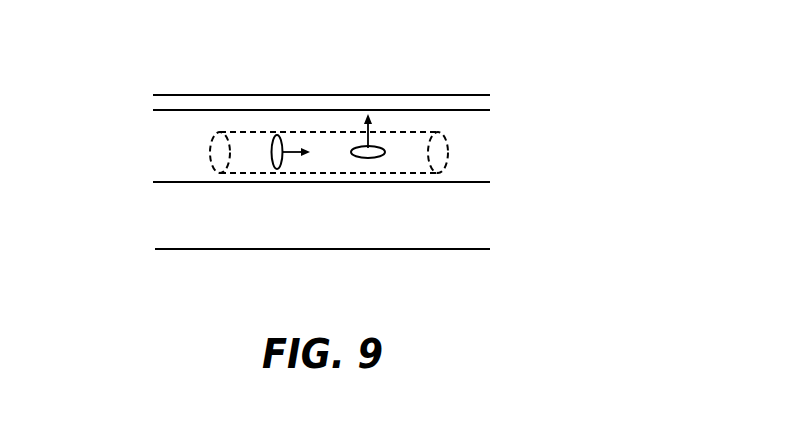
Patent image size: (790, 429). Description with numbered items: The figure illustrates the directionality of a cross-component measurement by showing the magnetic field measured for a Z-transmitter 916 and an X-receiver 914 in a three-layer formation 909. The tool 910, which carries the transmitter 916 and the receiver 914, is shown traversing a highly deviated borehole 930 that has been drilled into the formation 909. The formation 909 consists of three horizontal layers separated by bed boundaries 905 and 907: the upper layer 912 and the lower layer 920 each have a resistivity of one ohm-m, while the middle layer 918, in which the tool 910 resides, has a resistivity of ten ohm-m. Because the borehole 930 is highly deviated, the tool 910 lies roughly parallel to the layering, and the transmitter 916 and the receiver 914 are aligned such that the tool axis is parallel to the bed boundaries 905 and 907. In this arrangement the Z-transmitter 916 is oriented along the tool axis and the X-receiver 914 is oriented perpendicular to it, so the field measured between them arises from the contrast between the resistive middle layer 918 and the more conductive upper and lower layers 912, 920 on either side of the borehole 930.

The bed boundary 905 is at (291, 231).
The bed boundary 907 is at (295, 79).
The three-layer formation 909 is at (602, 34).
The tool 910 is at (370, 100).
The upper layer 912 is at (217, 84).
The X-receiver 914 is at (412, 86).
The Z-transmitter 916 is at (245, 93).
The middle layer 918 is at (227, 232).
The lower layer 920 is at (217, 286).
The borehole 930 is at (500, 154).